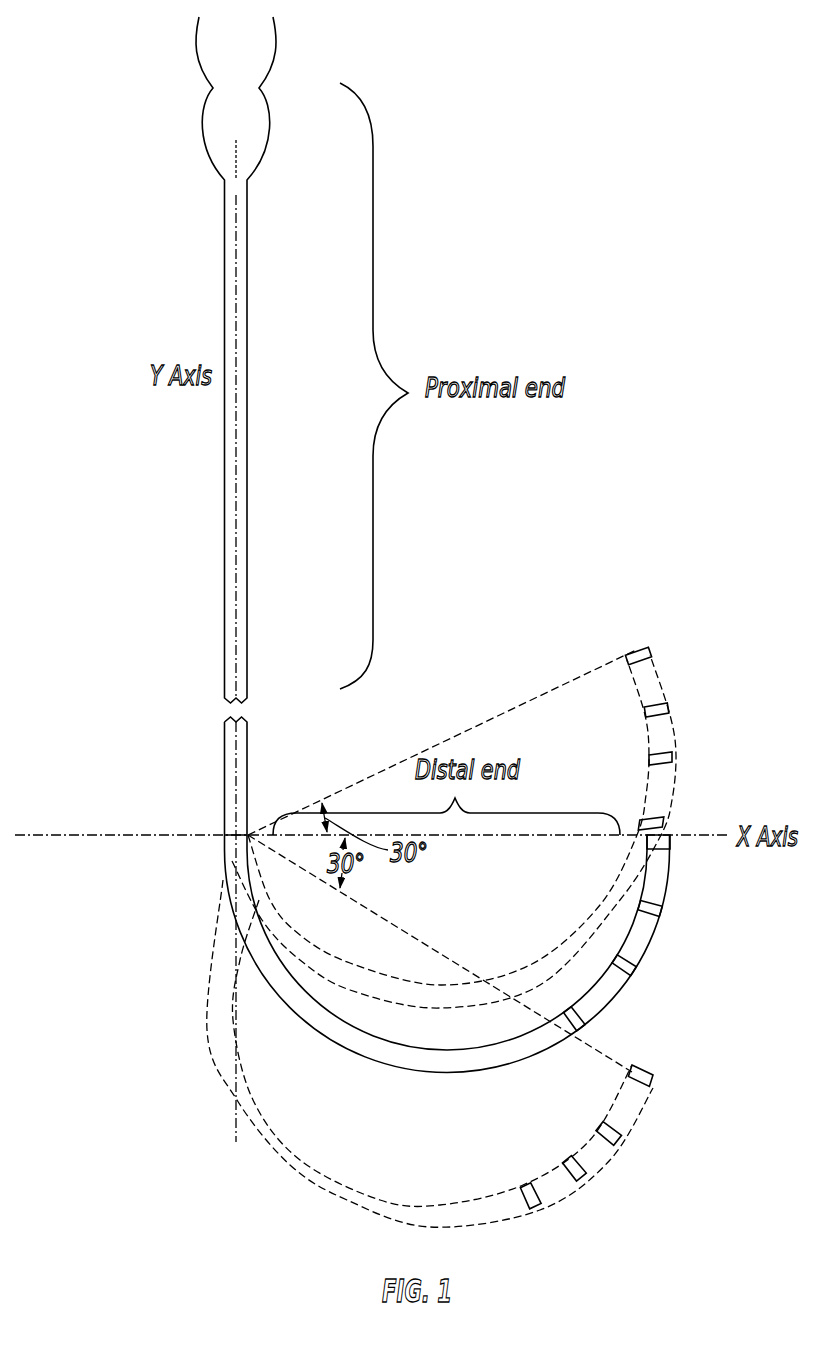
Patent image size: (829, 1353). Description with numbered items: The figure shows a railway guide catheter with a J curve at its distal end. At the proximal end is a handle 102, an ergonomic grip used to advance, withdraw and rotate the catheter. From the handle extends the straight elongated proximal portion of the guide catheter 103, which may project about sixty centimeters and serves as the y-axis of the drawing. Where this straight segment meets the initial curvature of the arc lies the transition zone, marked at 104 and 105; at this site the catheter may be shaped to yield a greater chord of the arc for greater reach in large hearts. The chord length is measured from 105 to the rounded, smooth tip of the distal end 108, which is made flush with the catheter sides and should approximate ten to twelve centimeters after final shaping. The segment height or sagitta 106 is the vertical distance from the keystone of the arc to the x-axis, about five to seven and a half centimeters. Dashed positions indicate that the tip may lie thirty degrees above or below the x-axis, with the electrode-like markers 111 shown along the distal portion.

The handle 102 is at (190, 133).
The straight elongated proximal portion of the guide catheter 103 is at (190, 333).
The transition zone 104 is at (190, 787).
The transition zone 105 is at (209, 862).
The segment height or sagitta 106 is at (448, 838).
The tip of the distal end of the catheter 108 is at (676, 822).
The electrodes 111 is at (682, 918).